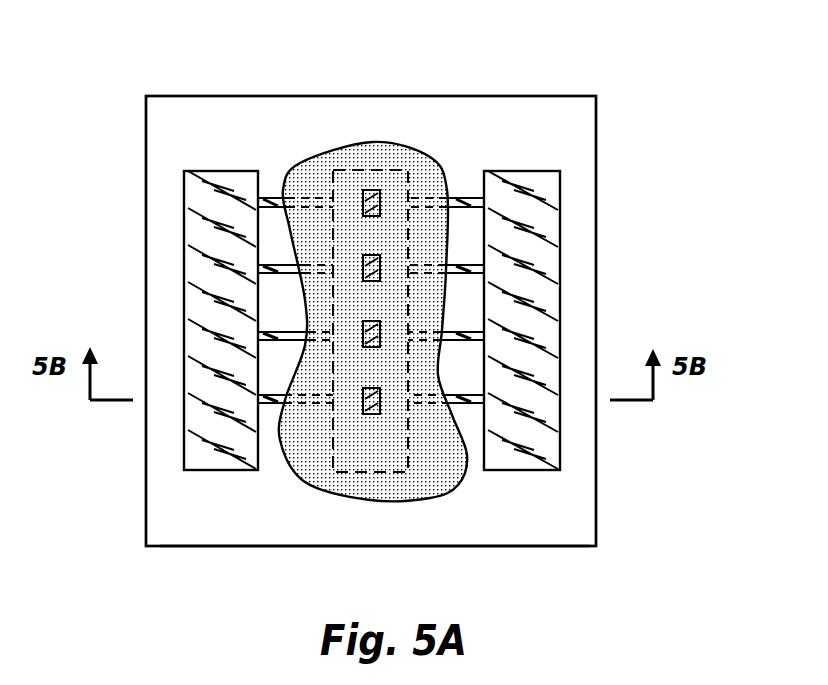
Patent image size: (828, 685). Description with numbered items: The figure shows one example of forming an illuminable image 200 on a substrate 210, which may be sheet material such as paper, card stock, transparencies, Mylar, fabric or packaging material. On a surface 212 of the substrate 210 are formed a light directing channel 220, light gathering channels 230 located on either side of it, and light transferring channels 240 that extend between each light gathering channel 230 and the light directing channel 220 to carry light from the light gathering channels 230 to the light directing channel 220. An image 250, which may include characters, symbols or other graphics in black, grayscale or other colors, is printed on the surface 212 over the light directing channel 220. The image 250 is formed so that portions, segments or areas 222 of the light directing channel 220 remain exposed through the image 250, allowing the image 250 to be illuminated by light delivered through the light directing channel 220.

The illuminable image 200 is at (590, 70).
The substrate 210 is at (585, 164).
The surface 212 is at (563, 523).
The light directing channel 220 is at (397, 152).
The portions of light directing channel 222 is at (373, 268).
The light gathering channel 230 is at (177, 245).
The light transferring channel 240 is at (266, 276).
The image 250 is at (294, 163).